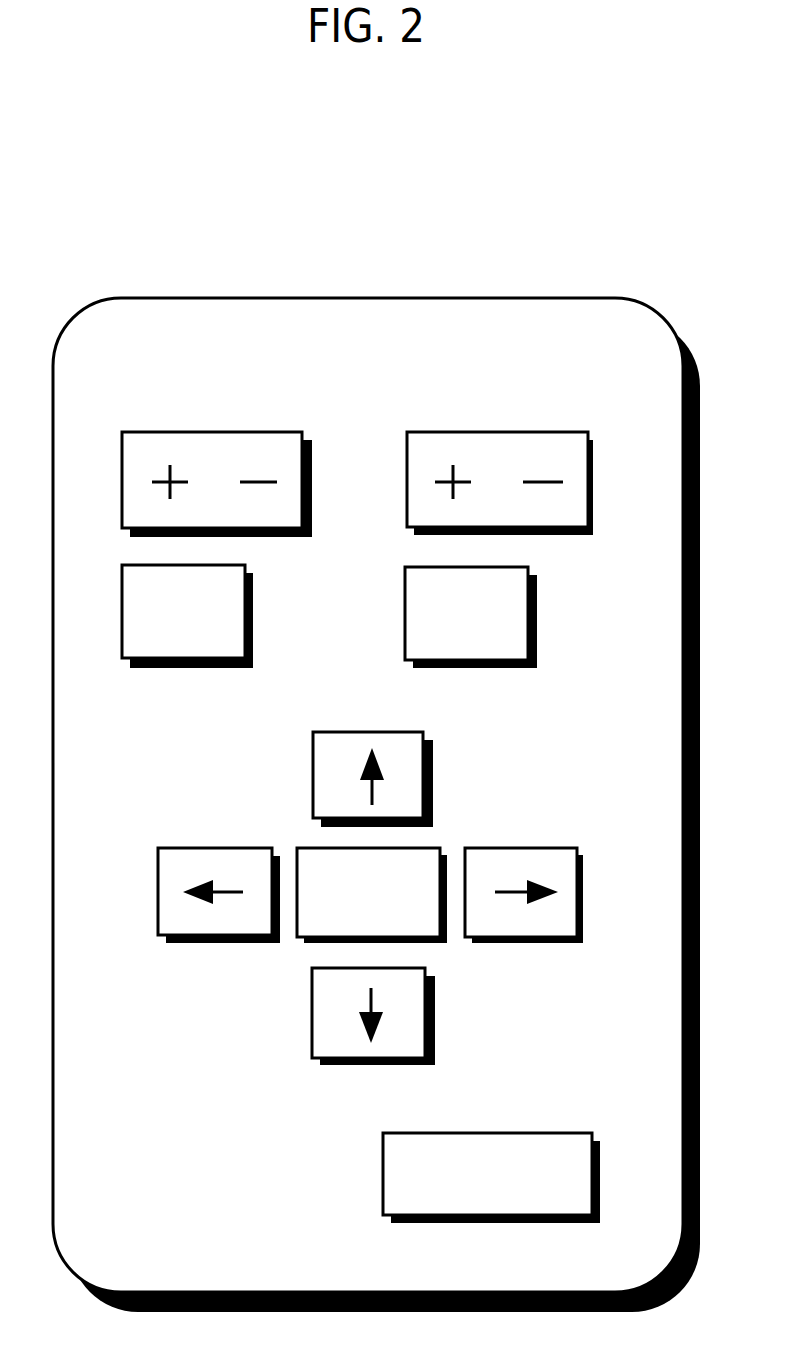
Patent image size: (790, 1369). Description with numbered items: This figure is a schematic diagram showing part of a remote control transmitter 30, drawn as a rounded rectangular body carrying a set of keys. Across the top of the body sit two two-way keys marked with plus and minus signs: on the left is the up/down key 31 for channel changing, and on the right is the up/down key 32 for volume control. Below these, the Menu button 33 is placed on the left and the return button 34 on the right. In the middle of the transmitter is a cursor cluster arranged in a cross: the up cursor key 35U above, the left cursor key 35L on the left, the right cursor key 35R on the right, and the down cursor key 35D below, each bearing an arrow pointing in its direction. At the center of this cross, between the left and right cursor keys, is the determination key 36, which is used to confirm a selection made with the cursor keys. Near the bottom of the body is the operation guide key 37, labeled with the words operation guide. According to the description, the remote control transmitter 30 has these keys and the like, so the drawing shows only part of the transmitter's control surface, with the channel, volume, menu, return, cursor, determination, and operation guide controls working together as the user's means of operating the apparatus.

The remote control transmitter 30 is at (582, 284).
The up/down key for channel changing 31 is at (300, 432).
The up/down key for volume control 32 is at (575, 433).
The Menu button 33 is at (121, 585).
The return button 34 is at (404, 602).
The up cursor key 35U is at (396, 732).
The left cursor key 35L is at (207, 848).
The right cursor key 35R is at (525, 848).
The down cursor key 35D is at (312, 1010).
The determination key 36 is at (320, 857).
The operation guide key 37 is at (532, 1133).